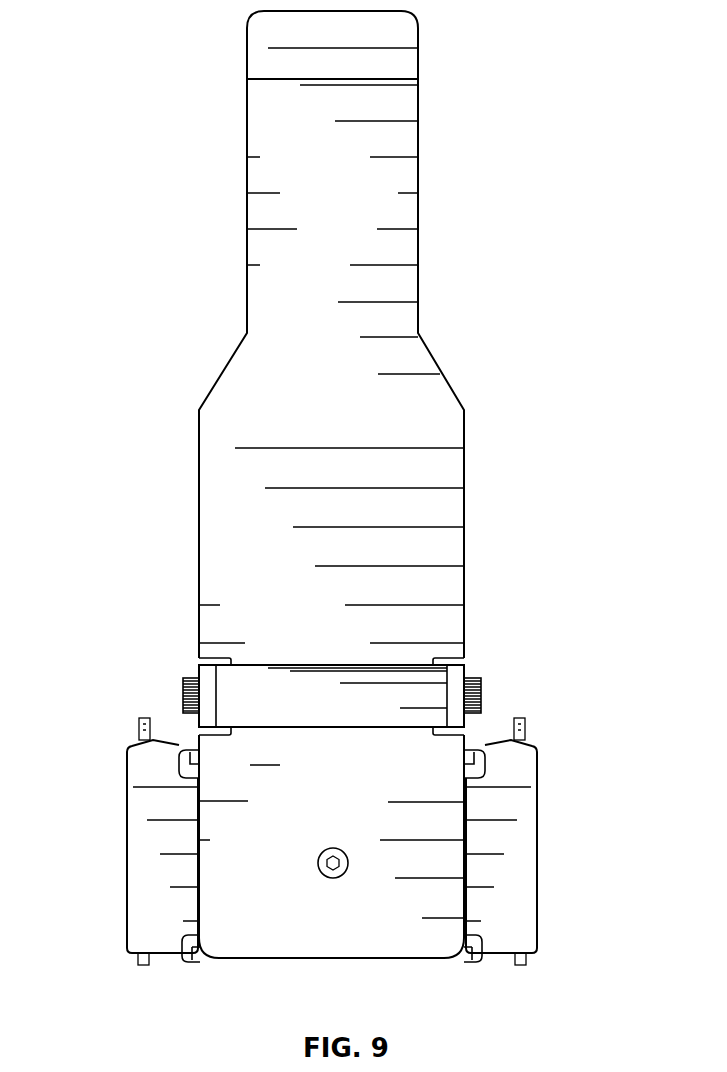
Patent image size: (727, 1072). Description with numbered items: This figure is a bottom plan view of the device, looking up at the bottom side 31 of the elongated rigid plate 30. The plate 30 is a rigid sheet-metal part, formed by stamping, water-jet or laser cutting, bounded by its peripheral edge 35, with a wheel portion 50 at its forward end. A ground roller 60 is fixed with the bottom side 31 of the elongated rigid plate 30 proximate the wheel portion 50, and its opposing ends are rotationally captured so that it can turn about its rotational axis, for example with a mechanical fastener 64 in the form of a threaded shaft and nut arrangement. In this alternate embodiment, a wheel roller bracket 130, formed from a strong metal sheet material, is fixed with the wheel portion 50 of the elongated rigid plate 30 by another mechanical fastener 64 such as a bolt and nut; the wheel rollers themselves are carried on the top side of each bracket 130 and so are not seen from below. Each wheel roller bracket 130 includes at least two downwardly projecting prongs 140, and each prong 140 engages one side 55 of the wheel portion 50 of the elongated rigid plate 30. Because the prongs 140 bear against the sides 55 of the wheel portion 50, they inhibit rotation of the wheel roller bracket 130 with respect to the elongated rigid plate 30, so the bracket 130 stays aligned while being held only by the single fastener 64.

The elongated rigid plate 30 is at (248, 528).
The bottom side 31 is at (274, 512).
The wheel portion 50 is at (320, 943).
The ground roller 60 is at (292, 693).
The mechanical fastener 64 is at (477, 680).
The downwardly projecting prongs 140 is at (192, 752).
The peripheral edge 35 is at (334, 841).
The side 55 is at (334, 841).
The wheel roller bracket 130 is at (522, 893).